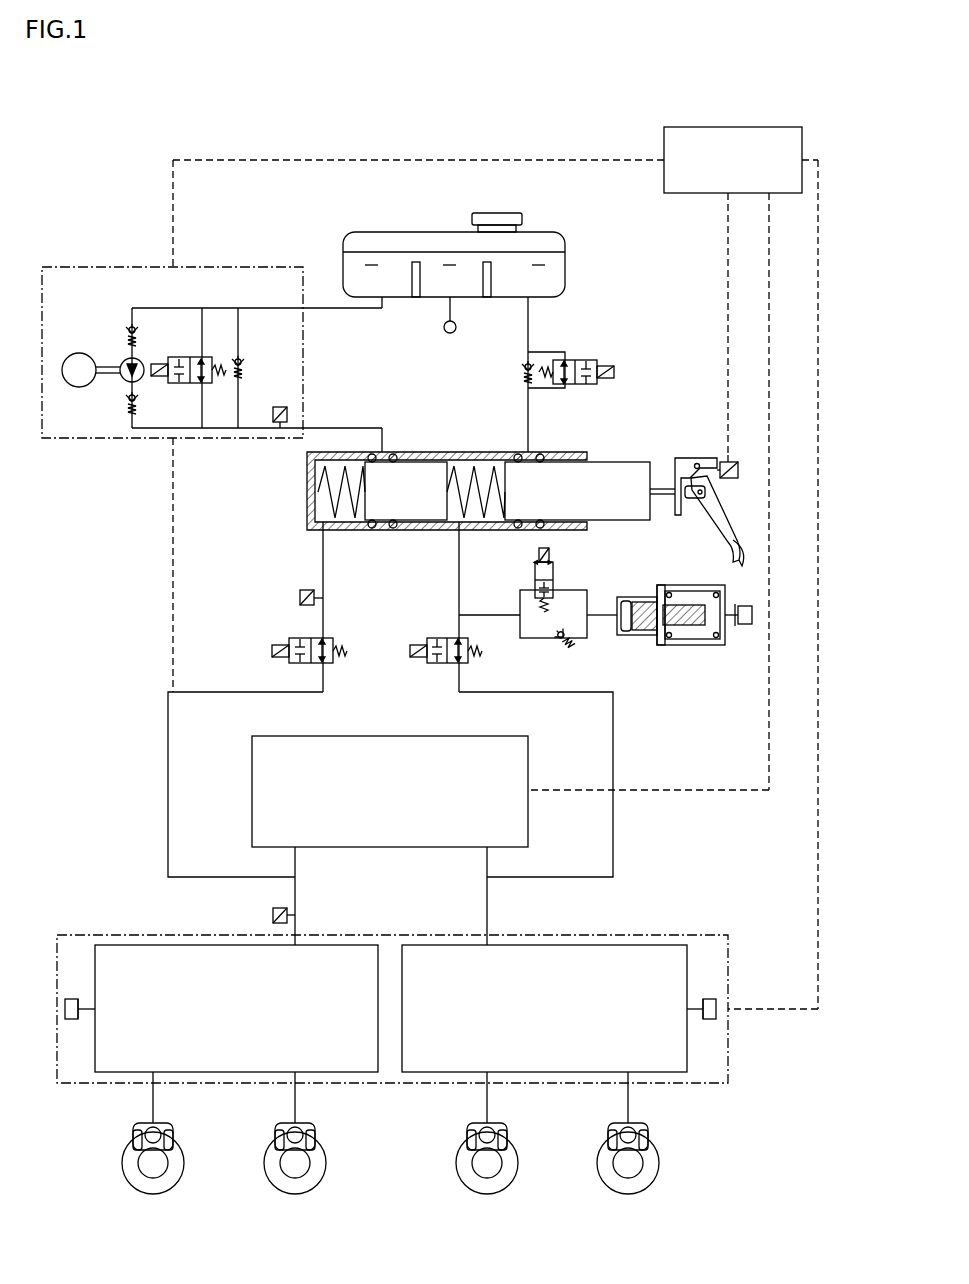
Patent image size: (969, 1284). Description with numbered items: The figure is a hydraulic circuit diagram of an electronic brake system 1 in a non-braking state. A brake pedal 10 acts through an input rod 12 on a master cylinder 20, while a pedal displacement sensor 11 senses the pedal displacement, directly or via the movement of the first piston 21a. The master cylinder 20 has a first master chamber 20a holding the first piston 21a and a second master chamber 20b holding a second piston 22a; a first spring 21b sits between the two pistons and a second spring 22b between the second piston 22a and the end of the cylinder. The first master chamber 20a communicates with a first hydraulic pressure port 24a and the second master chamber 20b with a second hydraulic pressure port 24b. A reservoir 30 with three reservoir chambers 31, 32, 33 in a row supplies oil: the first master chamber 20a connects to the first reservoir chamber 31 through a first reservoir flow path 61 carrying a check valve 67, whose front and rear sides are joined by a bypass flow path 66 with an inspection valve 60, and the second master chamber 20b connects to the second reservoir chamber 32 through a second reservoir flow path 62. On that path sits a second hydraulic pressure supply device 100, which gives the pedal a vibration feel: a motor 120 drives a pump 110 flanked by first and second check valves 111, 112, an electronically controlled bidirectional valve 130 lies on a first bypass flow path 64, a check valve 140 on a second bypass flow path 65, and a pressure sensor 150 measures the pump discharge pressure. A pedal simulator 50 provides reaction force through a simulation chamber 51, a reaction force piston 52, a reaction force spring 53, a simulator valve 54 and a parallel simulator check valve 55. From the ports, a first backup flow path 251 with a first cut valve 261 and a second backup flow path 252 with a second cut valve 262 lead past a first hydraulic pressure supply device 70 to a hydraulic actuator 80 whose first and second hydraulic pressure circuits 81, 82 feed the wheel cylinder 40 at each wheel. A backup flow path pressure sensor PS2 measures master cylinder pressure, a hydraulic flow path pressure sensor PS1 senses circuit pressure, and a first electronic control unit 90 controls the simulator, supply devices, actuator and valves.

The electronic brake system 1 is at (328, 137).
The brake pedal 10 is at (723, 508).
The pedal displacement sensor 11 is at (738, 462).
The input rod 12 is at (664, 487).
The master cylinder 20 is at (307, 470).
The first master chamber 20a is at (485, 470).
The second master chamber 20b is at (336, 467).
The first piston 21a is at (615, 470).
The first spring 21b is at (475, 510).
The second piston 22a is at (413, 470).
The second spring 22b is at (318, 488).
The first hydraulic pressure port 24a is at (456, 528).
The second hydraulic pressure port 24b is at (316, 530).
The reservoir 30 is at (343, 247).
The first reservoir chamber 31 is at (539, 263).
The second reservoir chamber 32 is at (370, 263).
The third reservoir chamber 33 is at (448, 263).
The wheel cylinder 40 is at (173, 1137).
The pedal simulator 50 is at (692, 638).
The simulation chamber 51 is at (700, 649).
The reaction force piston 52 is at (652, 638).
The reaction force spring 53 is at (670, 638).
The simulator valve 54 is at (554, 566).
The simulator check valve 55 is at (570, 645).
The inspection valve 60 is at (599, 360).
The first reservoir flow path 61 is at (525, 344).
The second reservoir flow path 62 is at (168, 308).
The first bypass flow path 64 is at (204, 321).
The second bypass flow path 65 is at (240, 330).
The bypass flow path 66 is at (548, 389).
The check valve 67 is at (520, 372).
The first hydraulic pressure supply device 70 is at (242, 765).
The hydraulic actuator 80 is at (672, 935).
The first hydraulic pressure circuit 81 is at (640, 947).
The second hydraulic pressure circuit 82 is at (130, 947).
The first electronic control unit 90 is at (731, 127).
The second hydraulic pressure supply device 100 is at (75, 258).
The pump 110 is at (124, 362).
The first check valve 111 is at (128, 325).
The second check valve 112 is at (125, 401).
The motor 120 is at (74, 352).
The electronically controlled bidirectional valve 130 is at (187, 357).
The check valve 140 is at (245, 364).
The pressure sensor 150 is at (279, 406).
The first backup flow path 251 is at (457, 578).
The second backup flow path 252 is at (321, 578).
The first cut valve 261 is at (482, 658).
The second cut valve 262 is at (347, 656).
The hydraulic flow path pressure sensor PS1 is at (273, 915).
The backup flow path pressure sensor PS2 is at (300, 598).